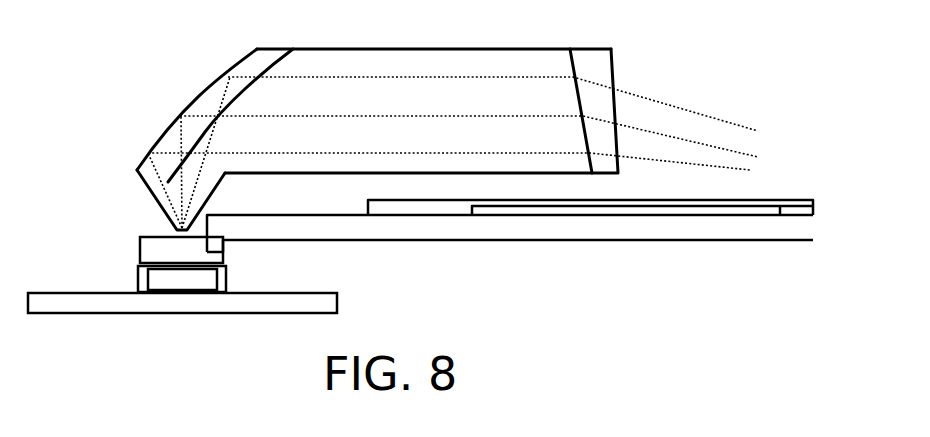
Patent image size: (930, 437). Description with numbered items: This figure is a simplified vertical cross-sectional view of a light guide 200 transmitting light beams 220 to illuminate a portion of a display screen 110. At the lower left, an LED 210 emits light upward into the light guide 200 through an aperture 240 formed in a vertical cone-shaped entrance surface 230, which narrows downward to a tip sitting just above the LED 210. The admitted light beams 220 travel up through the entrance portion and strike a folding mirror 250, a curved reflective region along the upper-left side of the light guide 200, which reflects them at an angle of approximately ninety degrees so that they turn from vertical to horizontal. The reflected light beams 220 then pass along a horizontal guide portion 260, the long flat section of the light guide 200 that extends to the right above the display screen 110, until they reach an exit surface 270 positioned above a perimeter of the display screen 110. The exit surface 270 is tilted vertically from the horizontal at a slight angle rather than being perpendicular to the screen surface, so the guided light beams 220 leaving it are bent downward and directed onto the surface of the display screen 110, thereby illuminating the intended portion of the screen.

The display screen 110 is at (688, 197).
The light guide 200 is at (205, 72).
The LED 210 is at (123, 267).
The light beams 220 is at (465, 115).
The entrance surface 230 is at (160, 217).
The aperture 240 is at (175, 231).
The folding mirror 250 is at (172, 176).
The horizontal guide portion 260 is at (392, 47).
The exit surface 270 is at (617, 72).